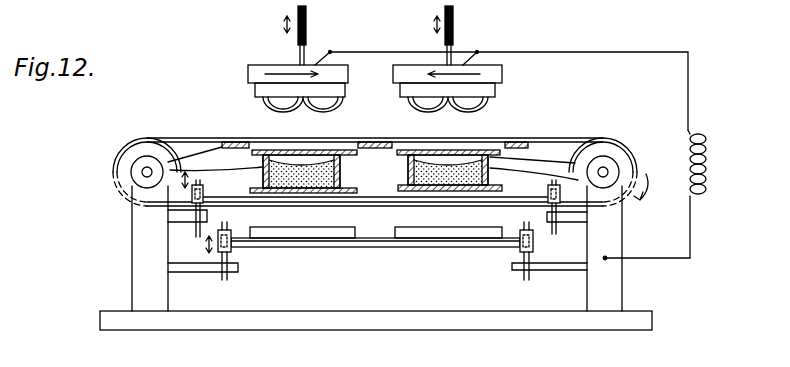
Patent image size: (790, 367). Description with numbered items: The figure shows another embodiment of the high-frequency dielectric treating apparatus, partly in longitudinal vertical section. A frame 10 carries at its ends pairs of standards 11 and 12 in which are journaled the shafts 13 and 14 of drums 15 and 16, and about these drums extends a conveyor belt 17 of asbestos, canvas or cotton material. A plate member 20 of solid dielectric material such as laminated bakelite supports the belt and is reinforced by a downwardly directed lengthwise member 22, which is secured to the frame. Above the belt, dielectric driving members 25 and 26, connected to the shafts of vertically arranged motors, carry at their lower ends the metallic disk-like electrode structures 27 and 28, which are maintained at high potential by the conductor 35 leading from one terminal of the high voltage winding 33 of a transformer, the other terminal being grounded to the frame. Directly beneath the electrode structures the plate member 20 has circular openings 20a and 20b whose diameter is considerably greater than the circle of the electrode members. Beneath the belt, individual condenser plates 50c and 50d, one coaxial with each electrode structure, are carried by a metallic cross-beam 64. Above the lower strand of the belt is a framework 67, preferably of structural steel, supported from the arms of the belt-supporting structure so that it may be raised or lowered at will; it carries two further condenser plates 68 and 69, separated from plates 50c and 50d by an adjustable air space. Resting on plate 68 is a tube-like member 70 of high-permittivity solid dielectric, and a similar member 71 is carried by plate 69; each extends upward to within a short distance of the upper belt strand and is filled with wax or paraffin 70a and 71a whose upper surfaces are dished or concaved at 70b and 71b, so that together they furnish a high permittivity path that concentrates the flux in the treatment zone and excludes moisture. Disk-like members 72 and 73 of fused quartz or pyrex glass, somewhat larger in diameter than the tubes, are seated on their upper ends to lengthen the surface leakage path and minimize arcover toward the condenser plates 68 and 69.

The frame 10 is at (398, 311).
The standards 11 is at (132, 230).
The standards 12 is at (614, 222).
The shaft 13 is at (142, 173).
The shaft 14 is at (608, 171).
The drum 15 is at (128, 146).
The drum 16 is at (612, 147).
The conveyor belt 17 is at (200, 141).
The plate member 20 is at (393, 127).
The circular opening 20a is at (250, 142).
The circular opening 20b is at (458, 149).
The reinforcing member 22 is at (192, 162).
The driving member 25 is at (306, 28).
The driving member 26 is at (453, 28).
The electrode structure 27 is at (348, 74).
The electrode structure 28 is at (502, 74).
The high voltage winding 33 is at (700, 127).
The conductor 35 is at (615, 52).
The condenser plate 50c is at (336, 228).
The condenser plate 50d is at (456, 228).
The cross-beam 64 is at (310, 247).
The frame-work 67 is at (380, 198).
The condenser plate 68 is at (356, 189).
The condenser plate 69 is at (494, 197).
The tube-like member 70 is at (342, 170).
The solid dielectric filling material 70a is at (216, 169).
The concave upper surface 70b is at (312, 130).
The tube-like member 71 is at (502, 177).
The solid dielectric filling material 71a is at (540, 157).
The concave upper surface 71b is at (437, 150).
The disk-like member 72 is at (342, 150).
The disk-like member 73 is at (505, 144).